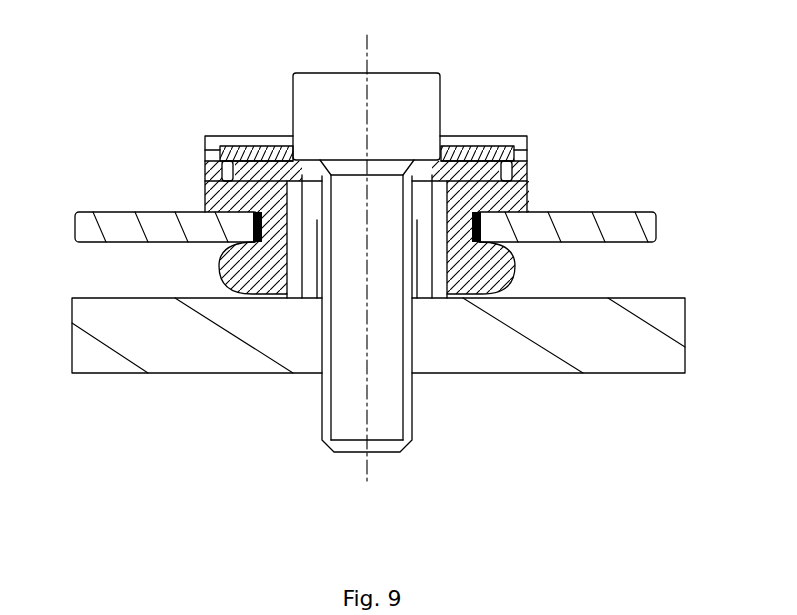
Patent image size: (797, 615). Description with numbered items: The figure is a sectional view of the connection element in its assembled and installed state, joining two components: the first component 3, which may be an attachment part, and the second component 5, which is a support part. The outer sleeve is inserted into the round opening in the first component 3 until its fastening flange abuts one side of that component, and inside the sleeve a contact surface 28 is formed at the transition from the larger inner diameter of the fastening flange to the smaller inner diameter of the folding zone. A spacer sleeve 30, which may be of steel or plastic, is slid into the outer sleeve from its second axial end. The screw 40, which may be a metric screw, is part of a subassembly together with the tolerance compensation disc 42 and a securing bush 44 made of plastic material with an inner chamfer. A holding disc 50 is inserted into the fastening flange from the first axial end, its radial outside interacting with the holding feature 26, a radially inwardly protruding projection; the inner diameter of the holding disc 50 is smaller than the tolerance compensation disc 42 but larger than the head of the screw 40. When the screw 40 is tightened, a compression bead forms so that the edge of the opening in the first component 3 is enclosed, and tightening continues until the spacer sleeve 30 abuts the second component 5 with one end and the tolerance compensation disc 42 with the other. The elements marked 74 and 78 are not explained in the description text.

The first component 3 is at (114, 212).
The second component 5 is at (685, 343).
The holding feature 26 is at (233, 150).
The contact surface 28 is at (228, 181).
The spacer sleeve 30 is at (298, 220).
The screw 40 is at (333, 88).
The tolerance compensation disc 42 is at (450, 152).
The securing bush 44 is at (320, 268).
The holding disc 50 is at (478, 163).
The housing 74 is at (524, 173).
The bushing 78 is at (503, 260).